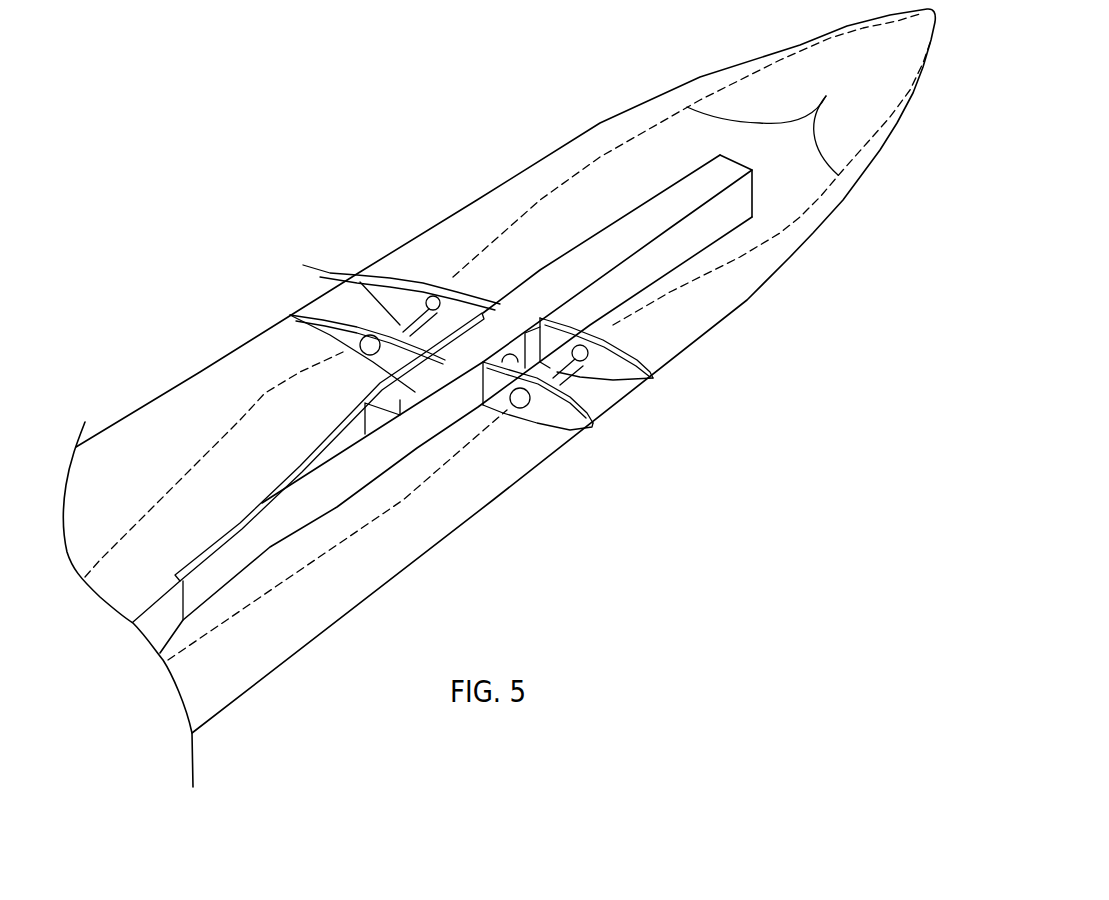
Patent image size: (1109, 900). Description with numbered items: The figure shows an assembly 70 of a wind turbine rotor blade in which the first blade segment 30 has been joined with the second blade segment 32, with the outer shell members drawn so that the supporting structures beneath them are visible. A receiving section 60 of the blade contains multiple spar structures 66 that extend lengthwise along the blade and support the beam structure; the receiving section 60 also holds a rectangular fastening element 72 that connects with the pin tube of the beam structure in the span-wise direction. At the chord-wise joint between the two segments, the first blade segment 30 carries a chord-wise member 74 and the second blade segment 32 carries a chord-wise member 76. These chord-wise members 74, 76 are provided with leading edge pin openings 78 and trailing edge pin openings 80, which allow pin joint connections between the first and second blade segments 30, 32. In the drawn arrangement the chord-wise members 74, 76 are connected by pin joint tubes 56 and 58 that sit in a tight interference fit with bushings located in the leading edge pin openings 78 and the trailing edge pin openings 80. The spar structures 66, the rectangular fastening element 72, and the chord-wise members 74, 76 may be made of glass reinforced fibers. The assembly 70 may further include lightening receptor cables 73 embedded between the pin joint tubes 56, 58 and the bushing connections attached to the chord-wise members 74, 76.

The first blade segment 30 is at (697, 78).
The second blade segment 32 is at (665, 215).
The pin joint tube 56 is at (578, 348).
The pin joint tube 58 is at (428, 303).
The receiving section 60 is at (465, 489).
The spar structures 66 is at (300, 458).
The assembly 70 is at (204, 214).
The rectangular fastening element 72 is at (373, 415).
The lightening receptor cables 73 is at (762, 118).
The chord-wise member 74 is at (645, 366).
The chord-wise member 76 is at (552, 432).
The leading edge pin openings 78 is at (585, 355).
The trailing edge pin openings 80 is at (362, 338).